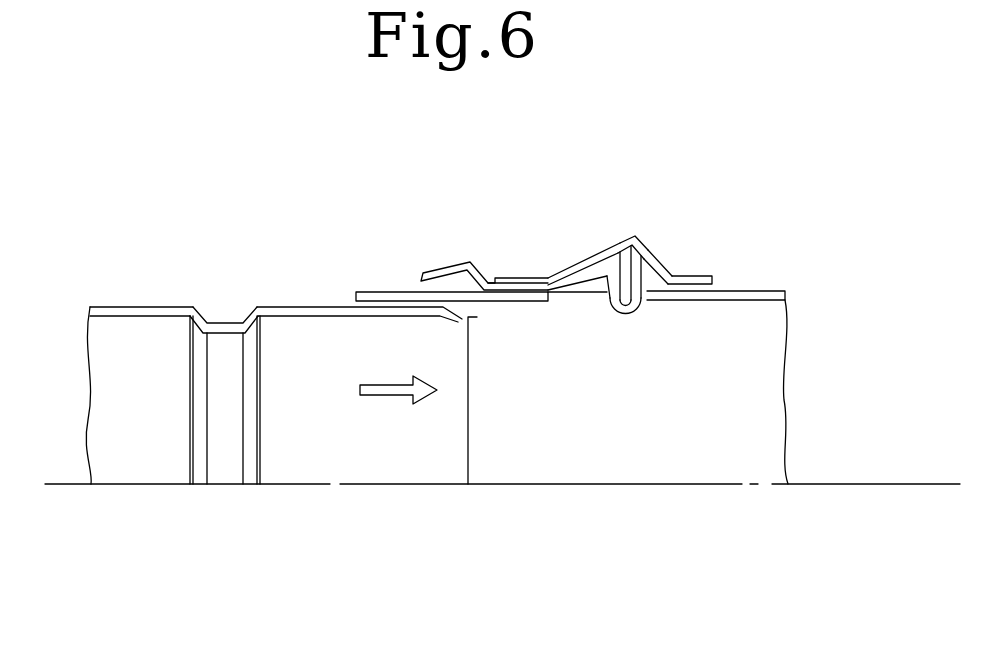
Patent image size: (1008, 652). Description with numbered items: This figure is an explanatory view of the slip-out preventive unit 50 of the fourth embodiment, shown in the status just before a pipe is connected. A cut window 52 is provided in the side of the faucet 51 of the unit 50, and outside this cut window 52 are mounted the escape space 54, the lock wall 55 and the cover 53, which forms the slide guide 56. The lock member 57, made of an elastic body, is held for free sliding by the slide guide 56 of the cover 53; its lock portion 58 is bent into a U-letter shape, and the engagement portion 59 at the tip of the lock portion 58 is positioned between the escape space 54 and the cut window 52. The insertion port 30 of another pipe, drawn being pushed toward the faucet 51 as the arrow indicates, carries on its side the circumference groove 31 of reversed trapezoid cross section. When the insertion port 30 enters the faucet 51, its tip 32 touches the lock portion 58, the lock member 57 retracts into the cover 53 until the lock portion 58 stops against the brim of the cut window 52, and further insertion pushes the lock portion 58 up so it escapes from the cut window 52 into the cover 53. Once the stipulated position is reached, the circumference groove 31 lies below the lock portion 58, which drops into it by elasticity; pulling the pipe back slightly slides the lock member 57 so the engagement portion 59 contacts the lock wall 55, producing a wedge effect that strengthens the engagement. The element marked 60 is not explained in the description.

The insertion port 30 is at (290, 307).
The circumference groove 31 is at (222, 323).
The tip of insertion port 32 is at (476, 318).
The slip-out preventive unit 50 is at (705, 254).
The faucet 51 is at (358, 292).
The cut window 52 is at (583, 298).
The cover 53 is at (621, 237).
The escape space 54 is at (648, 272).
The lock wall 55 is at (595, 255).
The slide guide 56 is at (518, 278).
The lock member 57 is at (600, 303).
The lock portion 58 is at (676, 326).
The engagement portion 59 is at (640, 256).
The bent tab 60 is at (433, 270).